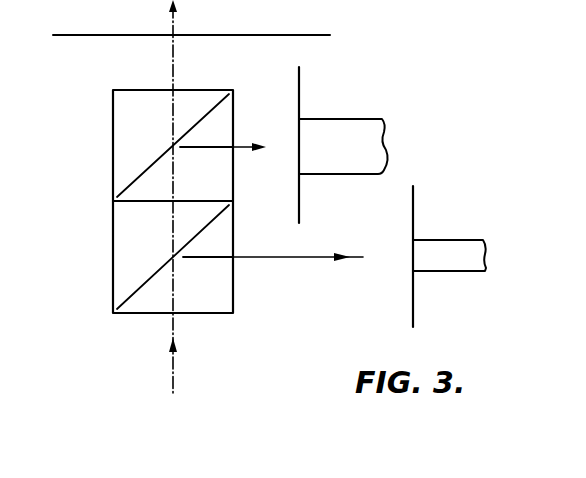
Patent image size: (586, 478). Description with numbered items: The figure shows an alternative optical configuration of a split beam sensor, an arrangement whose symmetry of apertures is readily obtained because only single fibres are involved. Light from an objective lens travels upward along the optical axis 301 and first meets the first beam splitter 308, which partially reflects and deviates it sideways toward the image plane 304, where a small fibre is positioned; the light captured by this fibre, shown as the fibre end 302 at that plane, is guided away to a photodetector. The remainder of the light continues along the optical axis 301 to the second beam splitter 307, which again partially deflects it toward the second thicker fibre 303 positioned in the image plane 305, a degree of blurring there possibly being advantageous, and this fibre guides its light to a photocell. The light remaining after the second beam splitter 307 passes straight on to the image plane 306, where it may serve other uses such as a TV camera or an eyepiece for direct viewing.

The optical axis 301 is at (176, 340).
The second detector 302 is at (463, 261).
The second thicker fibre 303 is at (348, 160).
The image plane 304 is at (415, 198).
The image plane 305 is at (300, 87).
The image plane 306 is at (283, 35).
The second beam splitter 307 is at (124, 144).
The first beam splitter 308 is at (128, 252).